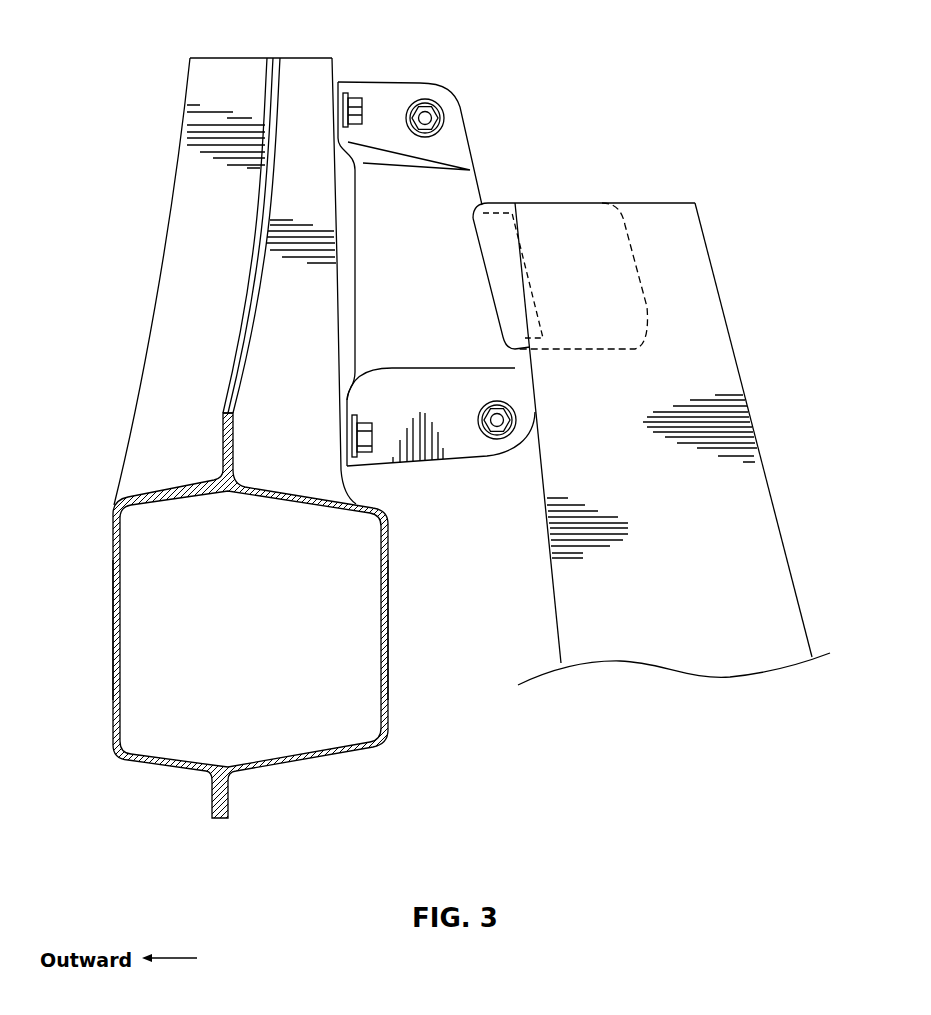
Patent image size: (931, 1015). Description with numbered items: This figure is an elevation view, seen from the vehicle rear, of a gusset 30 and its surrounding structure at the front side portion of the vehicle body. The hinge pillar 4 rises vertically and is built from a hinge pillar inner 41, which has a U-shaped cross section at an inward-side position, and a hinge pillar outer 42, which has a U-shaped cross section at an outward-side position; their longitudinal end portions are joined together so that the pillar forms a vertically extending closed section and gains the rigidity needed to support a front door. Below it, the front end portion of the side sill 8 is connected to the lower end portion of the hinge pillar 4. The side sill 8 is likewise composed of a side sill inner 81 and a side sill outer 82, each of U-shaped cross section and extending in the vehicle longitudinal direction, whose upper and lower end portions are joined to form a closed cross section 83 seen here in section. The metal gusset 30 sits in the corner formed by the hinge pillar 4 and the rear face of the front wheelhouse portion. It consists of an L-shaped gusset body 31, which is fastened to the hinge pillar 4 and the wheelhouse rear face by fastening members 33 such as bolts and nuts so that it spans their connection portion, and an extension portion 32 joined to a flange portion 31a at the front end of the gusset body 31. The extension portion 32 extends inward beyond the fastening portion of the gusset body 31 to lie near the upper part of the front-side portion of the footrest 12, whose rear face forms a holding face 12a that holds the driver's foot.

The hinge pillar 4 is at (221, 257).
The hinge pillar inner 41 is at (313, 81).
The hinge pillar outer 42 is at (204, 88).
The gusset 30 is at (448, 270).
The gusset body 31 is at (464, 196).
The flange portion 31a is at (504, 214).
The extension portion 32 is at (565, 215).
The fastening members 33 is at (354, 95).
The footrest 12 is at (659, 420).
The holding face 12a is at (705, 322).
The side sill 8 is at (251, 640).
The side sill inner 81 is at (390, 613).
The side sill outer 82 is at (115, 575).
The closed cross section 83 is at (234, 648).